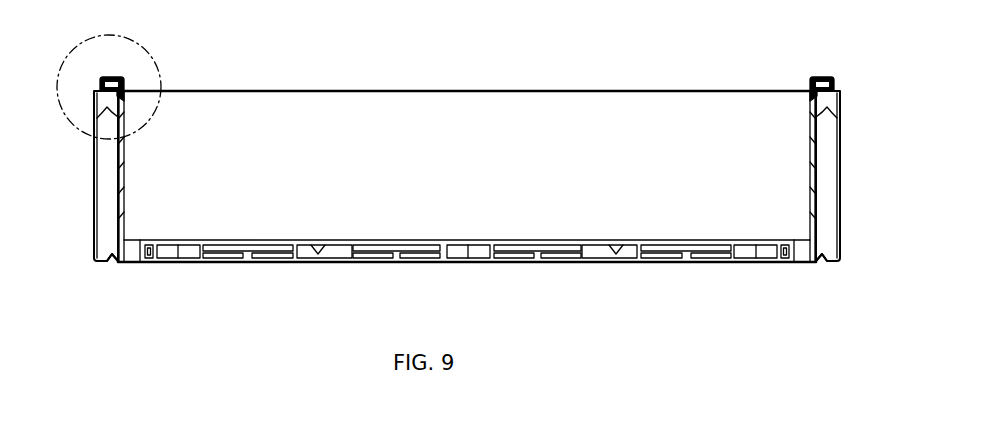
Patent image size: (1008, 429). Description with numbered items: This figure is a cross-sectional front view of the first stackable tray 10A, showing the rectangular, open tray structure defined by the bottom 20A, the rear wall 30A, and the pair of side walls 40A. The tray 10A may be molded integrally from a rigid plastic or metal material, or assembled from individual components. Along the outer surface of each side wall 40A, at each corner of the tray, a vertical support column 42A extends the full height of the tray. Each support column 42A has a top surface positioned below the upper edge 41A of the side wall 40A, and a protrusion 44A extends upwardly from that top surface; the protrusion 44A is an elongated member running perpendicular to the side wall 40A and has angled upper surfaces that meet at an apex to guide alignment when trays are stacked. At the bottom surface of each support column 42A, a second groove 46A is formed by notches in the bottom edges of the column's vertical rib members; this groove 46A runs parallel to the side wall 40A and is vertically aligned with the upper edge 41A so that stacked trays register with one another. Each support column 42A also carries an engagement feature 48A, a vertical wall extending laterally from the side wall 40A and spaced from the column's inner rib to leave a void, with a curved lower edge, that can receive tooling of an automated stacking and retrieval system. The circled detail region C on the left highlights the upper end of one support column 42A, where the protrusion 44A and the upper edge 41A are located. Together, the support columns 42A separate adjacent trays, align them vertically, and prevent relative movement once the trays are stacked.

The first stackable tray 10A is at (533, 34).
The bottom 20A is at (543, 238).
The rear wall 30A is at (486, 171).
The side wall 40A is at (125, 183).
The upper edge 41A is at (123, 81).
The support column 42A is at (110, 198).
The protrusion 44A is at (107, 78).
The second groove 46A is at (117, 260).
The engagement feature 48A is at (96, 118).
The detail region C is at (147, 54).